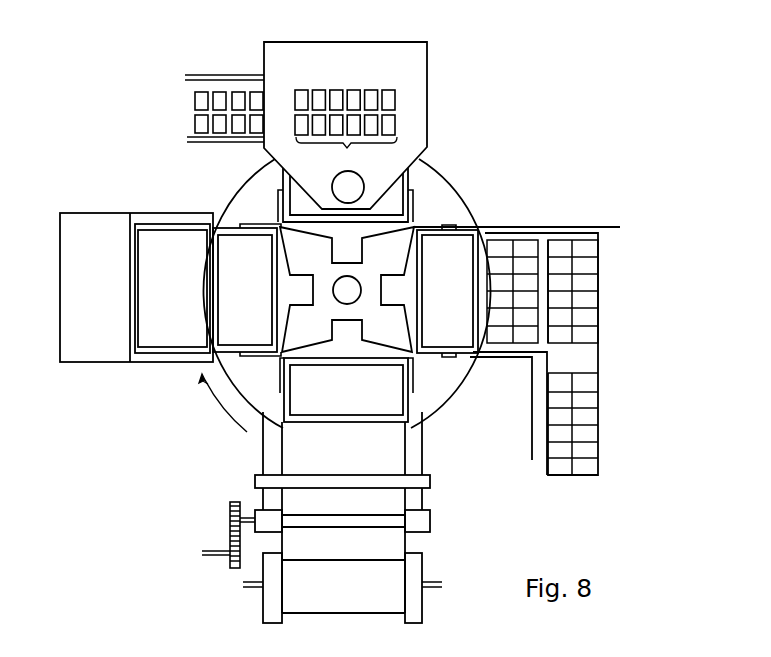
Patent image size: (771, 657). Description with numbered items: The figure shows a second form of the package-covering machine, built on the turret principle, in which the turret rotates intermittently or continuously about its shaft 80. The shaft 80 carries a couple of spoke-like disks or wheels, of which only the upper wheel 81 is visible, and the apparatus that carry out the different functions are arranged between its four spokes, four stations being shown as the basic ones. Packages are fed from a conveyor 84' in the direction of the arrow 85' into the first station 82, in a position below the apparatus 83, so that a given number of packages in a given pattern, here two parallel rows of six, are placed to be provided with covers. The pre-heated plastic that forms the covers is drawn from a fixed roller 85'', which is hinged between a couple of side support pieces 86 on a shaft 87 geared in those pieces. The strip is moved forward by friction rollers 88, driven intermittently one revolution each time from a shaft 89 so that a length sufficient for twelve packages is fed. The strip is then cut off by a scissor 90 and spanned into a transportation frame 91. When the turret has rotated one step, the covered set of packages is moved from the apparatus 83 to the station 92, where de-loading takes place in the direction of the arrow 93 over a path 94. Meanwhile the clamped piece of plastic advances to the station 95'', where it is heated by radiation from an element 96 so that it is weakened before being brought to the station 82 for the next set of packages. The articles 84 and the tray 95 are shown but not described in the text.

The shaft 80 is at (353, 300).
The upper spoke-like wheel 81 is at (393, 265).
The first station 82 is at (407, 170).
The apparatus 83 is at (382, 50).
The articles in hopper 84 is at (346, 146).
The conveyor 84' is at (211, 139).
The arrow 85' is at (224, 130).
The fixed roller 85'' is at (346, 608).
The side support pieces 86 is at (423, 572).
The shaft 87 is at (253, 588).
The friction rollers 88 is at (430, 523).
The shaft 89 is at (212, 560).
The scissor 90 is at (430, 482).
The transportation frame 91 is at (417, 453).
The station 92 is at (443, 232).
The arrow 93 is at (559, 215).
The path 94 is at (502, 337).
The tray 95 is at (447, 291).
The station 95'' is at (116, 287).
The element 96 is at (183, 334).